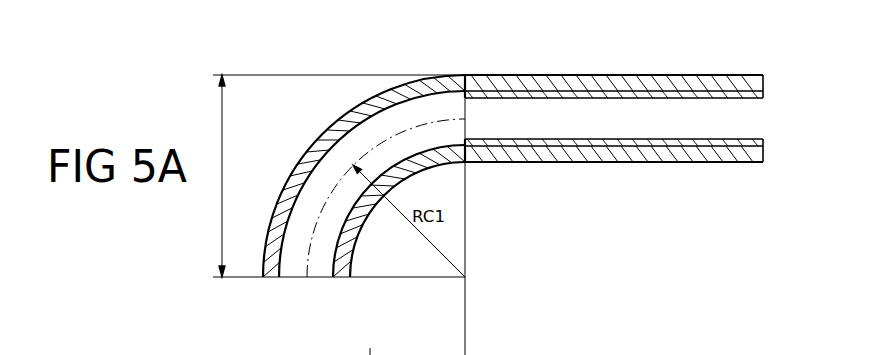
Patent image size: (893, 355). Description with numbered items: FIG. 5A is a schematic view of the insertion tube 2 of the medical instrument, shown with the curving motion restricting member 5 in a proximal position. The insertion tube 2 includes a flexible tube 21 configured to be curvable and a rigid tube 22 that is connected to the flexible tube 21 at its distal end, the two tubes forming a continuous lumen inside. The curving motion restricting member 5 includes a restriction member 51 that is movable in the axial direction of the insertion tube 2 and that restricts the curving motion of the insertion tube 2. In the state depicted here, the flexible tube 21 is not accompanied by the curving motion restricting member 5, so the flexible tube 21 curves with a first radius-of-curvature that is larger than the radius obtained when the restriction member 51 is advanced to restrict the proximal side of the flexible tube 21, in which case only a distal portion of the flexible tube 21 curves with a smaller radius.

The insertion tube 2 is at (510, 138).
The flexible tube 21 is at (307, 150).
The rigid tube 22 is at (538, 77).
The curving motion restricting member 5 is at (614, 90).
The restriction member 51 is at (673, 93).